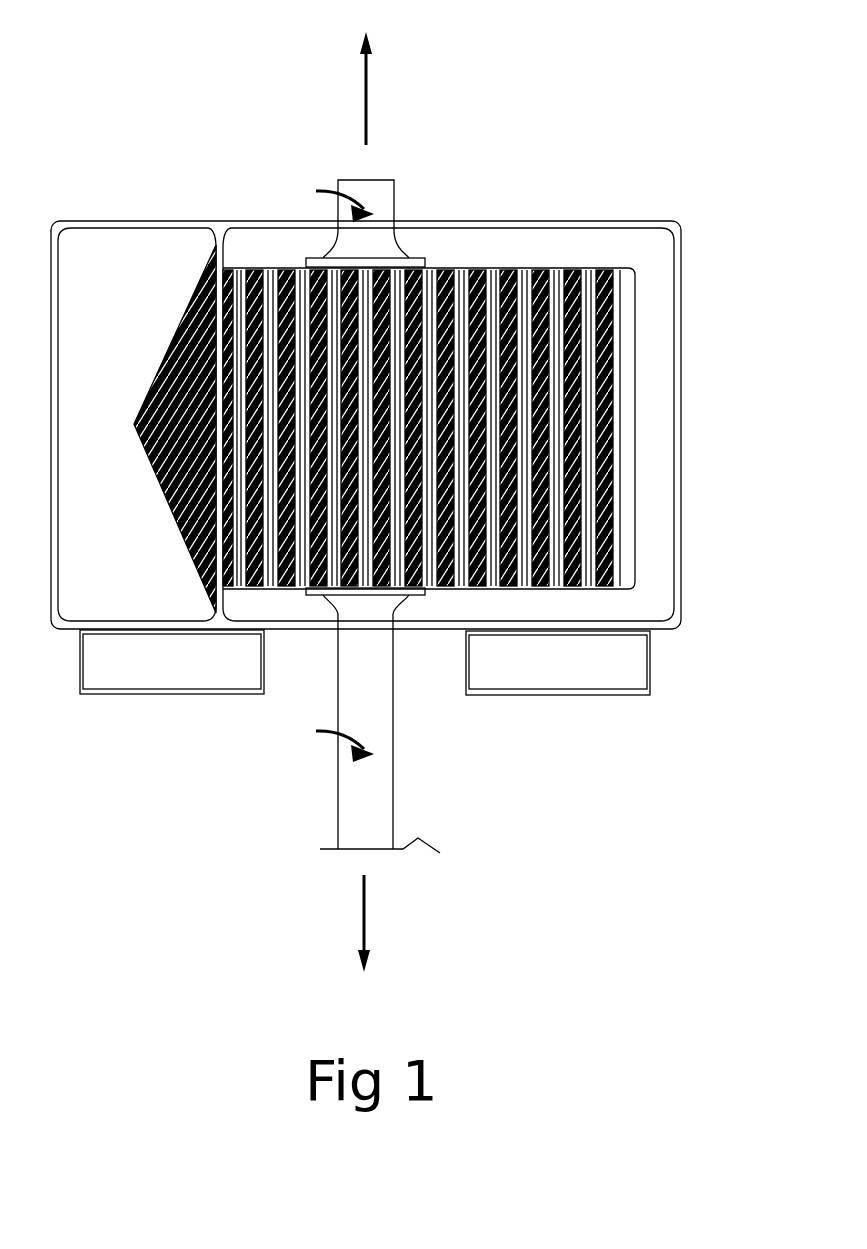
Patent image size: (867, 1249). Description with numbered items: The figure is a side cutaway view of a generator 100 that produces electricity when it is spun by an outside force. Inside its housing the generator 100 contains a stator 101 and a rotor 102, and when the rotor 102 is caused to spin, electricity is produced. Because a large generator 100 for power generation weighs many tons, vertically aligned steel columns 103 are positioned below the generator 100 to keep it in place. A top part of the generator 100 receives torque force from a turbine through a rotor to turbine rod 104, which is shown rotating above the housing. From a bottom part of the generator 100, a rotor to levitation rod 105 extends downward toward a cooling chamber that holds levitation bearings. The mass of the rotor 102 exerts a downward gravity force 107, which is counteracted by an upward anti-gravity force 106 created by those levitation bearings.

The generator 100 is at (120, 185).
The stator 101 is at (213, 221).
The rotor 102 is at (612, 292).
The steel columns 103 is at (642, 660).
The rotor to turbine rod 104 is at (387, 184).
The rotor to levitation rod 105 is at (384, 772).
The anti-gravity force 106 is at (352, 86).
The gravity force 107 is at (350, 915).